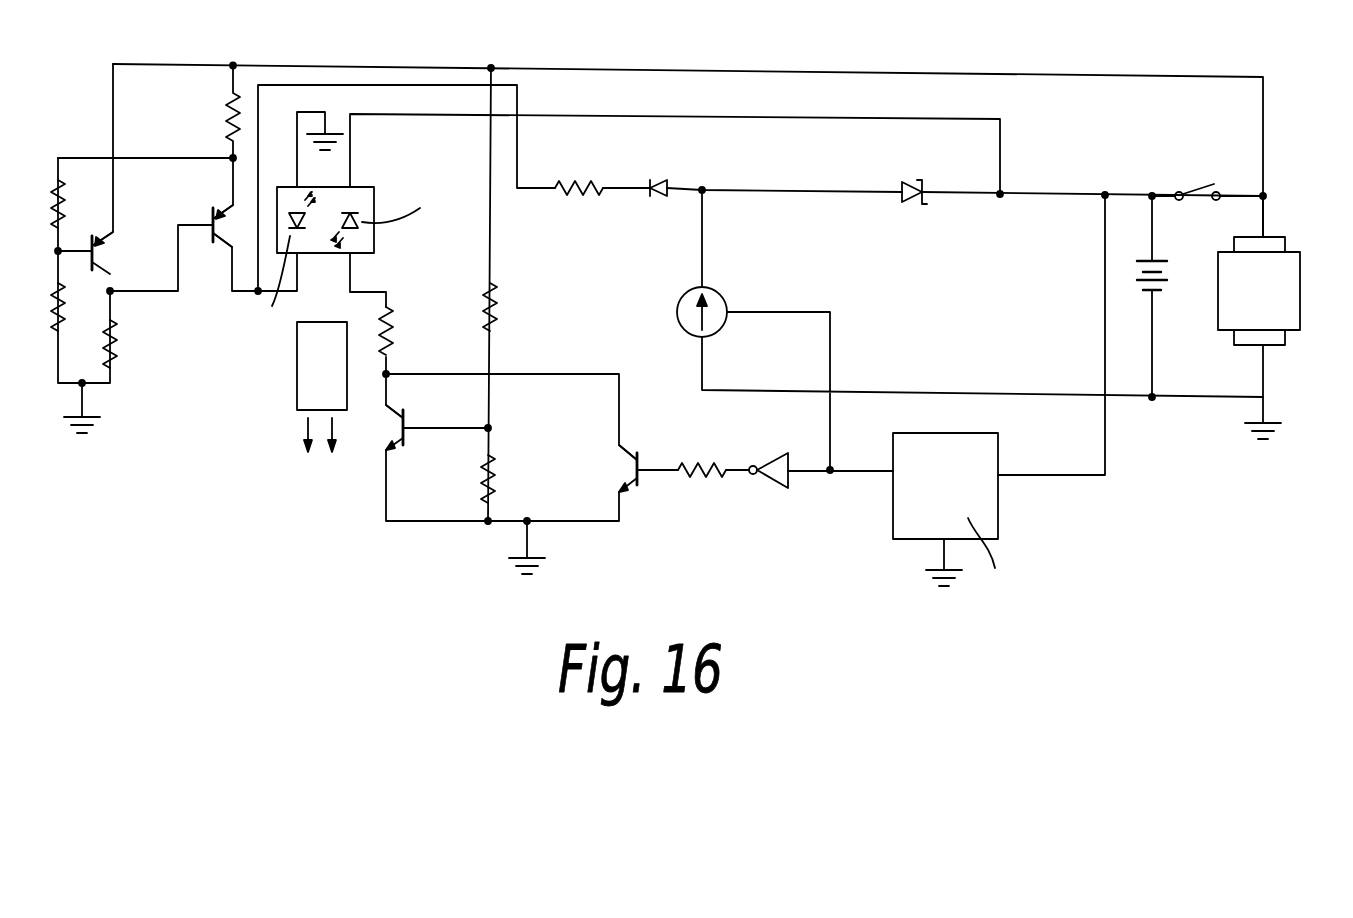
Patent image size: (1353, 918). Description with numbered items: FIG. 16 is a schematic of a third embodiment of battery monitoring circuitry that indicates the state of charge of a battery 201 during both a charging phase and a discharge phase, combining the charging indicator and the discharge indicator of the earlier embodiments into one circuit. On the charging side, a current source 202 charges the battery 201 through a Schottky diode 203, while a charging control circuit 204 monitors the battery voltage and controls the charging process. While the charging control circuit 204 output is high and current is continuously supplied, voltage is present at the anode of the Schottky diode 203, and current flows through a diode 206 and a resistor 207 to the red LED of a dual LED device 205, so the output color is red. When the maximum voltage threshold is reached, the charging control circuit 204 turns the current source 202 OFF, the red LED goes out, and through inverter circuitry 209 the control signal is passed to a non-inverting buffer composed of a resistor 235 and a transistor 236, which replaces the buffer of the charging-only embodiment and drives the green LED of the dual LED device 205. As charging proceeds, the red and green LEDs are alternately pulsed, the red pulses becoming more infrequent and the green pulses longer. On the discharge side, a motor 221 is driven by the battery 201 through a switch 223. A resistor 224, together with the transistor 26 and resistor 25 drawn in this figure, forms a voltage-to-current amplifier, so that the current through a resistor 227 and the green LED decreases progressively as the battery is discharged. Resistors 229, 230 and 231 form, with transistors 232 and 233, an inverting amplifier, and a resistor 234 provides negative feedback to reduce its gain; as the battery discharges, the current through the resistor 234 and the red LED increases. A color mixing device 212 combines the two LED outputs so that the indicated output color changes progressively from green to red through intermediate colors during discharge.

The battery 201 is at (1168, 290).
The current source 202 is at (675, 303).
The Schottky diode 203 is at (900, 185).
The charging control circuit 204 is at (1000, 510).
The dual LED device 205 is at (372, 186).
The diode 206 is at (702, 148).
The resistor 207 is at (590, 196).
The inverter circuitry 209 is at (775, 490).
The color mixing device 212 is at (300, 372).
The motor 221 is at (1290, 265).
The switch 223 is at (1197, 188).
The resistor 224 is at (498, 307).
The resistor 227 is at (395, 325).
The resistor 229 is at (70, 198).
The resistor 230 is at (70, 340).
The resistor 231 is at (118, 345).
The transistor 232 is at (108, 242).
The transistor 233 is at (220, 250).
The resistor 234 is at (230, 118).
The resistor 235 is at (700, 478).
The transistor 236 is at (645, 462).
The resistor 25 is at (495, 472).
The transistor 26 is at (410, 440).